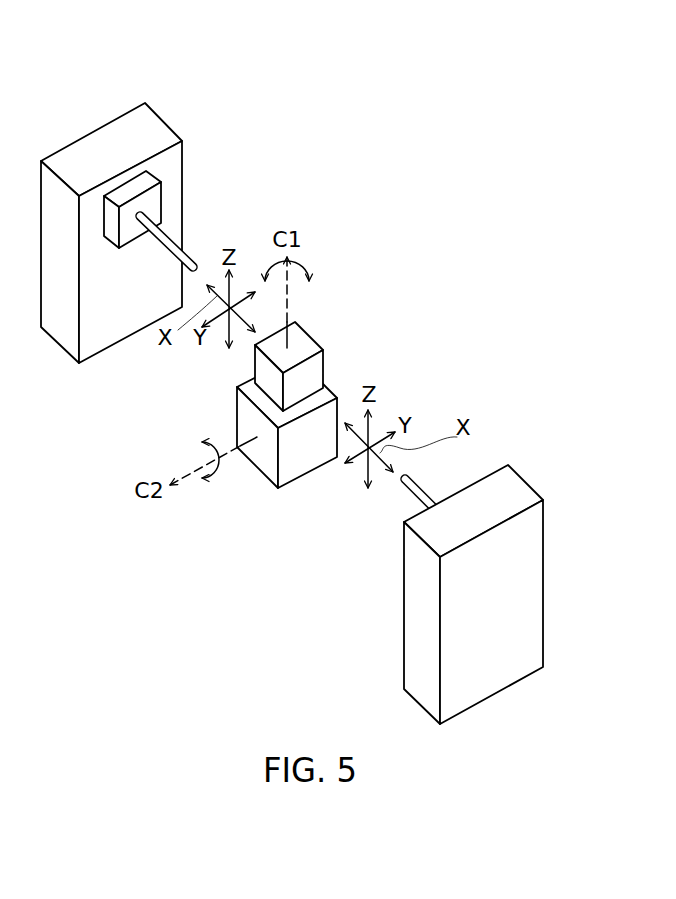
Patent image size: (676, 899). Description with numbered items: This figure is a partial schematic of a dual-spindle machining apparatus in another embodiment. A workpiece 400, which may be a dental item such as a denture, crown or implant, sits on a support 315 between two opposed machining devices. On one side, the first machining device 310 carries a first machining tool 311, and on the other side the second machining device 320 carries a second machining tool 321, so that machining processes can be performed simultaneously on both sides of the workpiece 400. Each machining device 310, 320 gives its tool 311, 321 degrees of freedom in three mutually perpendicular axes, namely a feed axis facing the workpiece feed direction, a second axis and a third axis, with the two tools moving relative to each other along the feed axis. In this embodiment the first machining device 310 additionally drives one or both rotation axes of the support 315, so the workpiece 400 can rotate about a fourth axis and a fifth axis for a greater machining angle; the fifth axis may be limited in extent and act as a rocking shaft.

The first machining device 310 is at (118, 82).
The first machining tool 311 is at (163, 242).
The support 315 is at (268, 480).
The second machining device 320 is at (529, 443).
The second machining tool 321 is at (413, 502).
The workpiece 400 is at (317, 342).